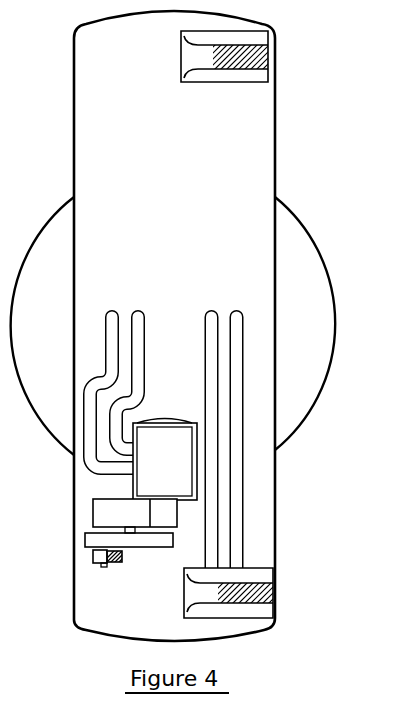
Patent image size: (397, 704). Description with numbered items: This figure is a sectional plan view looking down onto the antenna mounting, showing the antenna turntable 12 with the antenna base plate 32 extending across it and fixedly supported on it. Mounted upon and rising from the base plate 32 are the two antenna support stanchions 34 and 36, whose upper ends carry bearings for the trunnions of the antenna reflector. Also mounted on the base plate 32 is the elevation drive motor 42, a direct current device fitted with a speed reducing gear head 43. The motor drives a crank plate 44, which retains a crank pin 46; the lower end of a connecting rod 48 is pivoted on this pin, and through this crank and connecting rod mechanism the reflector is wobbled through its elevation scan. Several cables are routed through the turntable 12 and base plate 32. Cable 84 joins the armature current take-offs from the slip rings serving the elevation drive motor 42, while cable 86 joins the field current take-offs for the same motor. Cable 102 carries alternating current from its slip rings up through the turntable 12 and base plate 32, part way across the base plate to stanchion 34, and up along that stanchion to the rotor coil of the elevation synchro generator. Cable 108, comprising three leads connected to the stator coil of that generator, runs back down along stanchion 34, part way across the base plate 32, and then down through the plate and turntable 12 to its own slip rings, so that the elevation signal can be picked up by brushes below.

The antenna turntable 12 is at (316, 292).
The antenna base plate 32 is at (257, 138).
The antenna support stanchion 36 is at (228, 74).
The antenna support stanchion 34 is at (202, 594).
The cable 84 is at (88, 392).
The cable 86 is at (140, 348).
The cable 108 is at (212, 368).
The cable 102 is at (243, 352).
The elevation drive motor 42 is at (158, 432).
The speed reducing gear head 43 is at (107, 510).
The crank plate 44 is at (93, 538).
The crank pin 46 is at (103, 567).
The connecting rod 48 is at (123, 560).